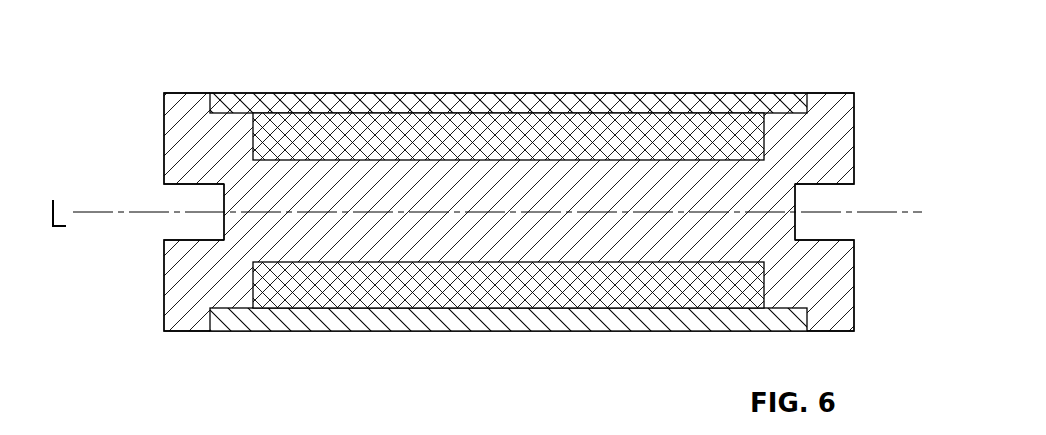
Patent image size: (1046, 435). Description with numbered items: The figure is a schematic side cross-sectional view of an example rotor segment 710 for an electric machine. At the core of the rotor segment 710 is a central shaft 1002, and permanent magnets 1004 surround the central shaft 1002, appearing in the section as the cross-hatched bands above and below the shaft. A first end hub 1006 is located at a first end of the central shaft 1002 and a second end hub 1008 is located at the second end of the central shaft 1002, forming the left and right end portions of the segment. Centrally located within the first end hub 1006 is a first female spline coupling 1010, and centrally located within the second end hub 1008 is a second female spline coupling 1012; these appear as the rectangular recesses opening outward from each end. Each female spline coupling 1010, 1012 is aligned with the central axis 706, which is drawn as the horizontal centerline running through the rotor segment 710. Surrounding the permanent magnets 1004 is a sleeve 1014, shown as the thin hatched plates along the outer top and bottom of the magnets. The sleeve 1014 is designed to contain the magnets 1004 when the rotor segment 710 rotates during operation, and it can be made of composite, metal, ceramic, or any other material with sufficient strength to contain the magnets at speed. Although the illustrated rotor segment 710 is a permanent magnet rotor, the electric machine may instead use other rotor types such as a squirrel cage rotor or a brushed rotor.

The rotor segment 710 is at (180, 35).
The central axis 706 is at (119, 212).
The central shaft 1002 is at (654, 183).
The permanent magnets 1004 is at (413, 138).
The first end hub 1006 is at (164, 132).
The second end hub 1008 is at (855, 137).
The first female spline coupling 1010 is at (165, 232).
The second female spline coupling 1012 is at (843, 227).
The sleeve 1014 is at (487, 332).